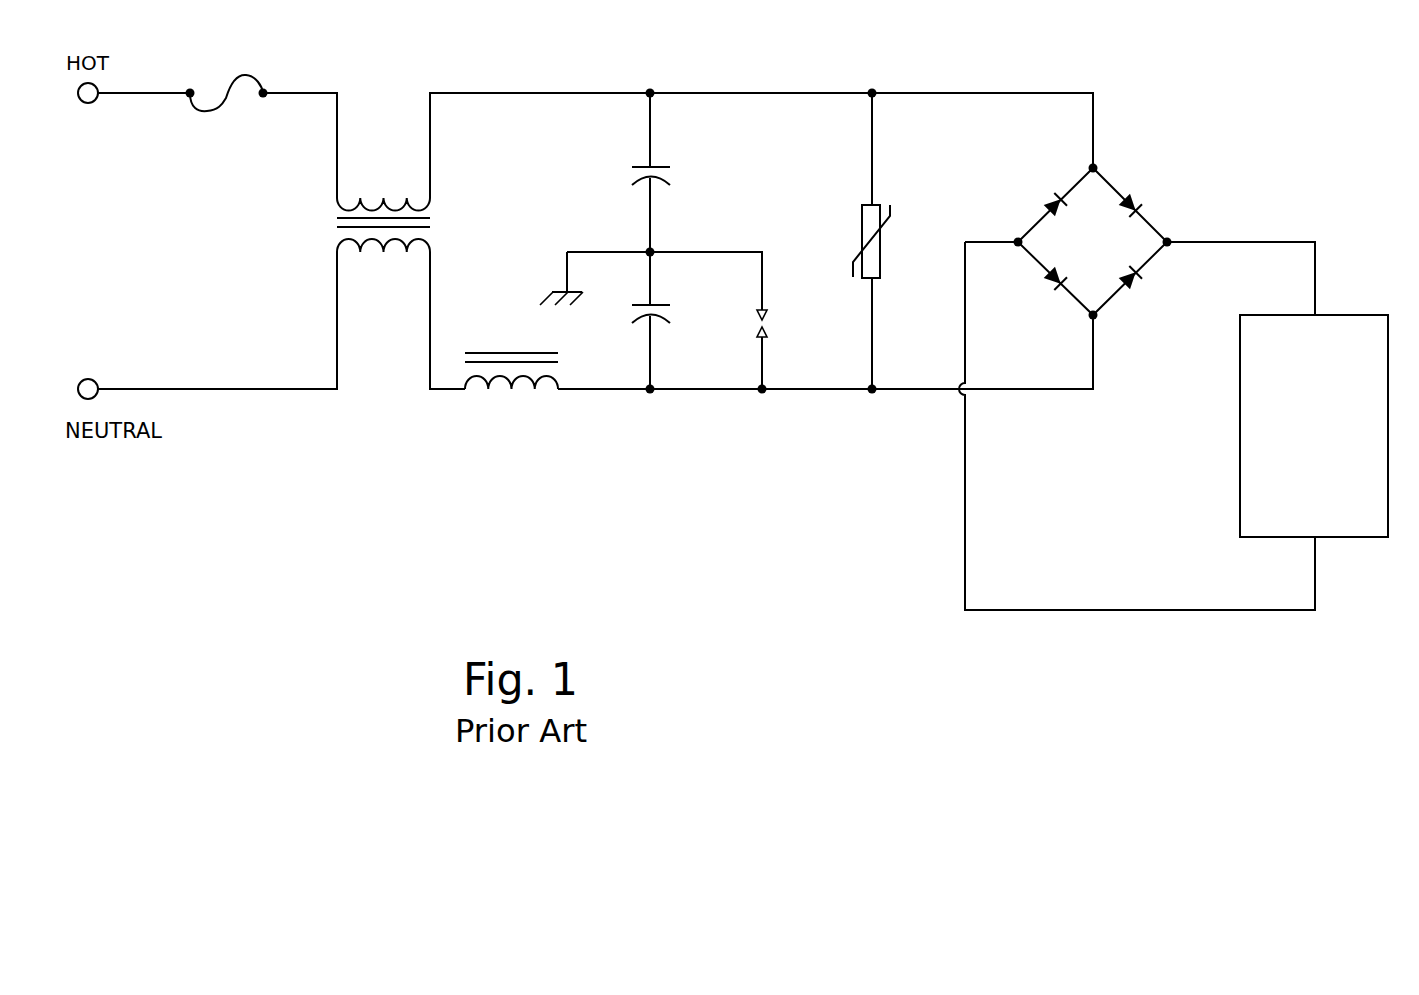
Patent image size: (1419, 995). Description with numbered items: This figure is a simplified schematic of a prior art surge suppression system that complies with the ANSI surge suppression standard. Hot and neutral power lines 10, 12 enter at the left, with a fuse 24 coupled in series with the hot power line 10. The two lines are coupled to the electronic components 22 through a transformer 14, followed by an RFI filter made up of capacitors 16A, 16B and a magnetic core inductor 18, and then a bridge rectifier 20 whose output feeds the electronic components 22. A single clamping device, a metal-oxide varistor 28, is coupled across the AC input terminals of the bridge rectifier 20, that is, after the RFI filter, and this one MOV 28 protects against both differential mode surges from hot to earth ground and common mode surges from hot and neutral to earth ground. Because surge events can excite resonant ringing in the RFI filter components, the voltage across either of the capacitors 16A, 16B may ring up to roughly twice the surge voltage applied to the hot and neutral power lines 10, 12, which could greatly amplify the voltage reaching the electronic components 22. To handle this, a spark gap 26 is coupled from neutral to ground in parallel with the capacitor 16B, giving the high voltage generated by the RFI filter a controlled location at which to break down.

The hot power line 10 is at (88, 103).
The neutral power line 12 is at (86, 379).
The transformer 14 is at (325, 228).
The capacitor 16A is at (667, 165).
The capacitor 16B is at (660, 305).
The magnetic core inductor 18 is at (522, 394).
The bridge rectifier 20 is at (1143, 188).
The electronic components 22 is at (1278, 500).
The fuse 24 is at (226, 98).
The spark gap 26 is at (782, 325).
The metal-oxide varistor 28 is at (870, 263).